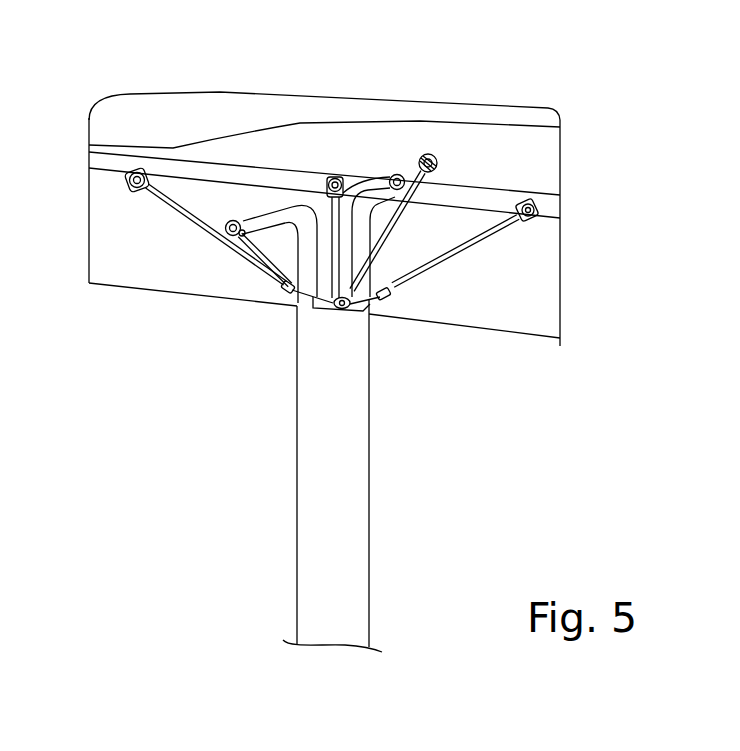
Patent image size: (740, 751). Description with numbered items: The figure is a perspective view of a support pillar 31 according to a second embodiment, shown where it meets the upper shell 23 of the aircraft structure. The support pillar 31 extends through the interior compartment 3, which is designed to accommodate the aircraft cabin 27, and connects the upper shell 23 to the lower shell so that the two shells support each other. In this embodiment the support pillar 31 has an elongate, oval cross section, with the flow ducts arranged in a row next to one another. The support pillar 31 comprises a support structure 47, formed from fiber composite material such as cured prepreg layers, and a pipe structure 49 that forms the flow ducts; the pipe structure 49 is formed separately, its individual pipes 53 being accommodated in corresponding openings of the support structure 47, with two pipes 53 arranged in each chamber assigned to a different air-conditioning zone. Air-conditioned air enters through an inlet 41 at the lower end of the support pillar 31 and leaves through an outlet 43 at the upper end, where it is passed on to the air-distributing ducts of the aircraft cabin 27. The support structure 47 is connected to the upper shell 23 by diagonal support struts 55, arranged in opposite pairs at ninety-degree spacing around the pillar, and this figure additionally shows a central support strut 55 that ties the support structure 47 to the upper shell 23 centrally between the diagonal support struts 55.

The interior compartment 3 is at (324, 274).
The upper shell 23 is at (512, 167).
The aircraft cabin 27 is at (324, 274).
The support pillar 31 is at (297, 216).
The inlet 41 is at (347, 504).
The outlet 43 is at (297, 306).
The support structure 47 is at (352, 517).
The pipe structure 49 is at (334, 165).
The pipe 53 is at (386, 205).
The support strut 55 is at (382, 238).